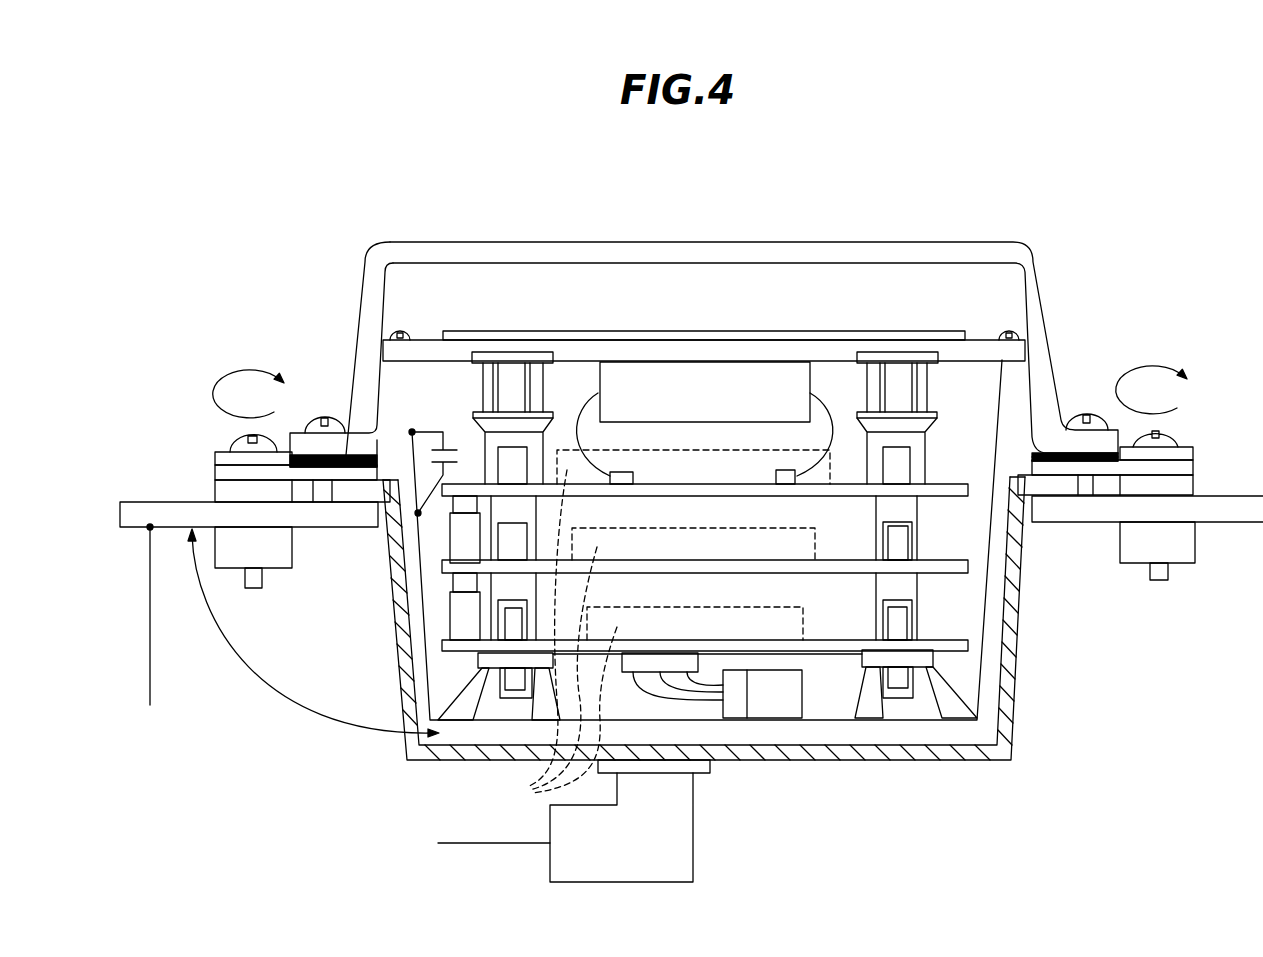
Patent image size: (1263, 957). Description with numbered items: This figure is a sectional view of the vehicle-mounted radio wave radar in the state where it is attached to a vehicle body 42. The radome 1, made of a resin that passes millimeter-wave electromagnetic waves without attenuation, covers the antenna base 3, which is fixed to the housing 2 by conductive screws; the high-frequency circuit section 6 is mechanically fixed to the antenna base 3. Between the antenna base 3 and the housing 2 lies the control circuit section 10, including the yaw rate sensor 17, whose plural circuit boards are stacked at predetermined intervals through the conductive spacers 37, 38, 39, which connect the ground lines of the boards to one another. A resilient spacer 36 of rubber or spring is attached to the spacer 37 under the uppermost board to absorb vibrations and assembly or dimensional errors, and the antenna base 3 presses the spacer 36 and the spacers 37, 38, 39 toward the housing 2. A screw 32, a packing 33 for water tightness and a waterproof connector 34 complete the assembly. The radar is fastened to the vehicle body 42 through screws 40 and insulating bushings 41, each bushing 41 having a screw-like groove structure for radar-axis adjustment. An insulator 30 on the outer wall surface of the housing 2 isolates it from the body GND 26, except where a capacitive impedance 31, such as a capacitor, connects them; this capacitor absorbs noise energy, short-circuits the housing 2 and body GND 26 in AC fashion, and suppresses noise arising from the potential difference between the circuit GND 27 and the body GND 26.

The radome 1 is at (548, 242).
The housing 2 is at (403, 553).
The antenna base 3 is at (620, 330).
The high-frequency circuit section 6 is at (700, 362).
The control circuit section 10 is at (527, 789).
The yaw rate sensor 17 is at (770, 705).
The body GND 26 is at (112, 697).
The circuit GND 27 is at (352, 868).
The insulator 30 is at (825, 758).
The capacitive impedance 31 is at (428, 455).
The screw 32 is at (320, 414).
The packing 33 is at (1060, 462).
The waterproof connector 34 is at (673, 845).
The spacer 36 is at (482, 377).
The spacer 37 is at (480, 420).
The spacer 38 is at (455, 548).
The spacer 39 is at (480, 660).
The screw 40 is at (232, 443).
The insulating bushing 41 is at (277, 550).
The vehicle body 42 is at (150, 502).